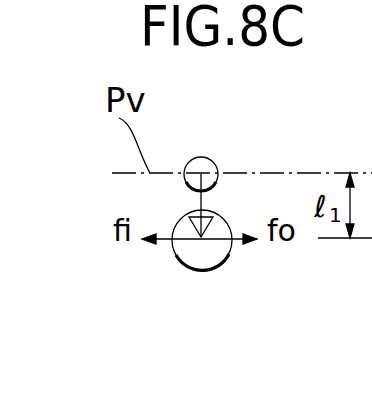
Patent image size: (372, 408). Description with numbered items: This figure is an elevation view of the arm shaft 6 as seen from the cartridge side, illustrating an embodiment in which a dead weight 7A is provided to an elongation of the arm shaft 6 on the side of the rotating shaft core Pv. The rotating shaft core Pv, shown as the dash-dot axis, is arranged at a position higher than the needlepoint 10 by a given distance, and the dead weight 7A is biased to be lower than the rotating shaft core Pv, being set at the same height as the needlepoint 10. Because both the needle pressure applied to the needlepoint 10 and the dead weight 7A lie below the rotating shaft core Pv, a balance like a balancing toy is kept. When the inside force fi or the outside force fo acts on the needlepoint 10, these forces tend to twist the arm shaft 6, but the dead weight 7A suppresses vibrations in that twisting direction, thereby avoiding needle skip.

The arm shaft 6 is at (211, 159).
The needlepoint 10 is at (214, 221).
The dead weight 7A is at (198, 270).